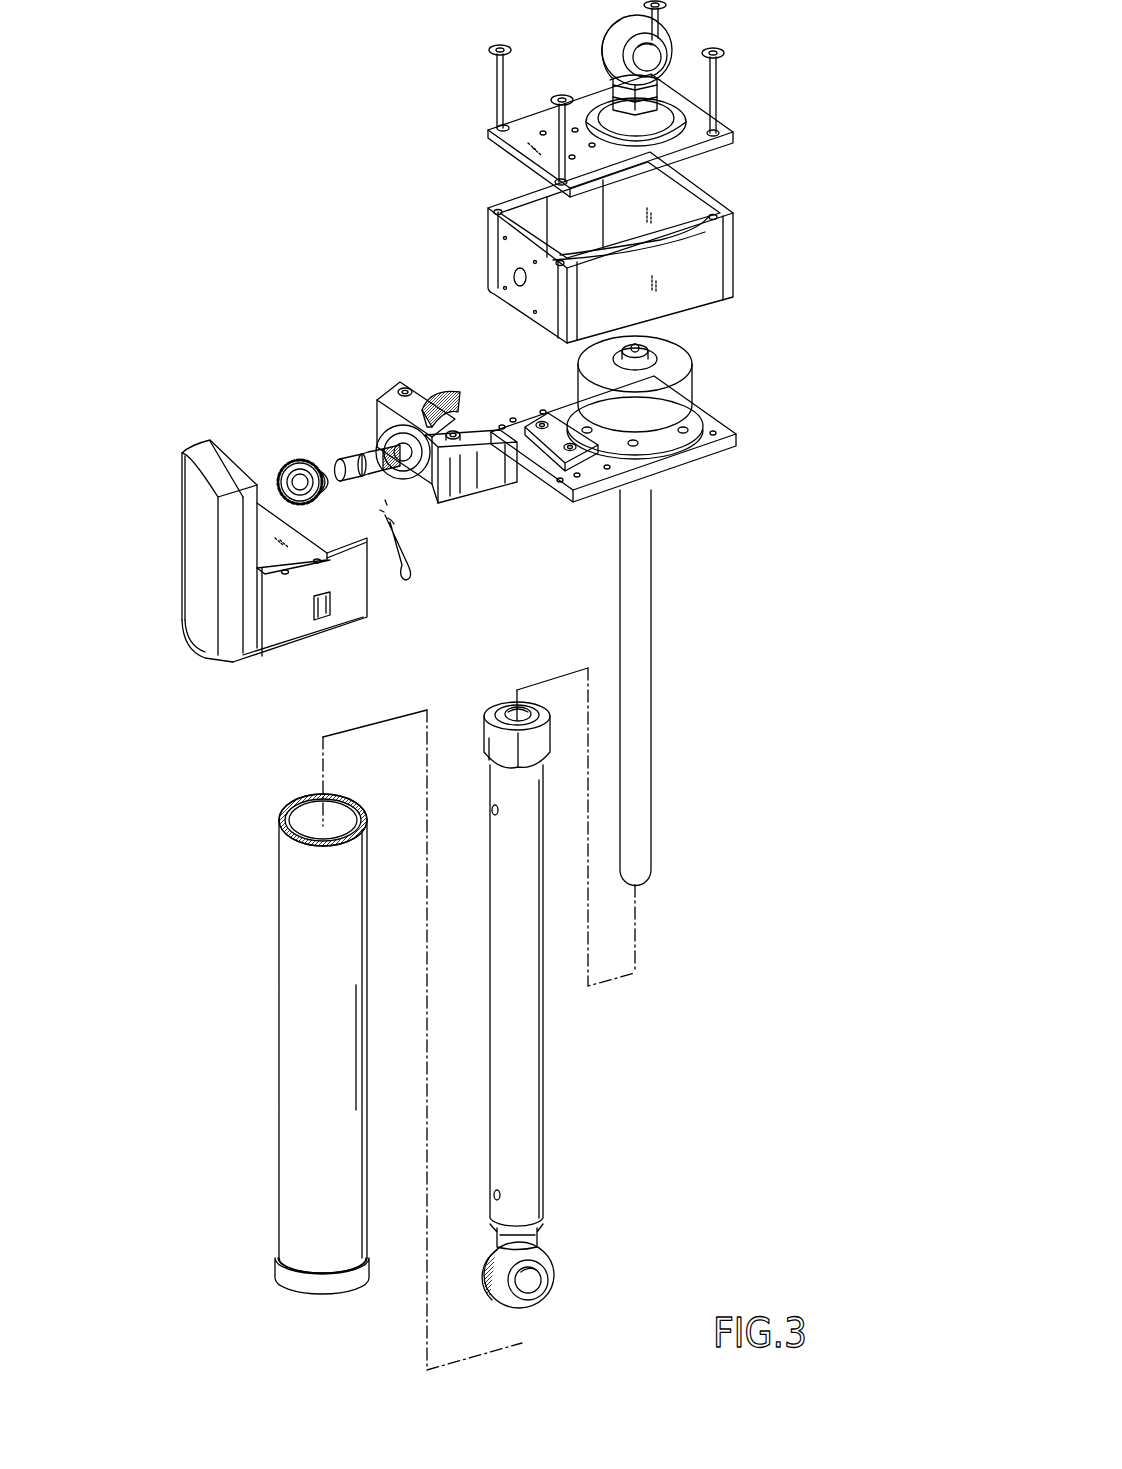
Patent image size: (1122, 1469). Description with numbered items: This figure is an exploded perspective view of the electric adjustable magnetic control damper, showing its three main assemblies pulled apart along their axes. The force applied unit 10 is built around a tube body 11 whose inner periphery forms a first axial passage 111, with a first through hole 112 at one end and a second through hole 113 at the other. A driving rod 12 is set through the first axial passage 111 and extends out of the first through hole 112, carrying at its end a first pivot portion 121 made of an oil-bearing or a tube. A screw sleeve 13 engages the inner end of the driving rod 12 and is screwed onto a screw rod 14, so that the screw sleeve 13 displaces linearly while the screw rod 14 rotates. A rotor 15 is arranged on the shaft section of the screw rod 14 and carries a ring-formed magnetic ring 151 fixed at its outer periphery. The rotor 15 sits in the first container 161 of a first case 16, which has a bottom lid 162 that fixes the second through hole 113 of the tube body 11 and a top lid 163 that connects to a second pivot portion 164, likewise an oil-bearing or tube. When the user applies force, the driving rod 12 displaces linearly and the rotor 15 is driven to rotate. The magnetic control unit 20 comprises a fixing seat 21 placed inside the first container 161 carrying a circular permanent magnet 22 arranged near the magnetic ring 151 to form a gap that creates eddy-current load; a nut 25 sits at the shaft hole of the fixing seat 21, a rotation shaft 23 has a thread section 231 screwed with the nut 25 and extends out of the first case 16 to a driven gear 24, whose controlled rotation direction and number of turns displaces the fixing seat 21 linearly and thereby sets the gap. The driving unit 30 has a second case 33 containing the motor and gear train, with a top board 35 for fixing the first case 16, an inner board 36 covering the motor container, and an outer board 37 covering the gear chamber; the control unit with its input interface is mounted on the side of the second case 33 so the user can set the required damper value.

The force applied unit 10 is at (846, 5).
The tube body 11 is at (360, 1040).
The first axial passage 111 is at (312, 815).
The first through hole 112 is at (287, 1293).
The second through hole 113 is at (283, 812).
The driving rod 12 is at (548, 982).
The first pivot portion 121 is at (545, 1295).
The screw sleeve 13 is at (507, 712).
The screw rod 14 is at (645, 628).
The rotor 15 is at (676, 389).
The magnetic ring 151 is at (675, 403).
The first case 16 is at (644, 247).
The first container 161 is at (697, 205).
The bottom lid 162 is at (703, 448).
The top lid 163 is at (687, 143).
The second pivot portion 164 is at (665, 65).
The magnetic control unit 20 is at (378, 431).
The fixing seat 21 is at (410, 505).
The circular permanent magnet 22 is at (450, 395).
The rotation shaft 23 is at (341, 419).
The thread section 231 is at (378, 445).
The driven gear 24 is at (290, 462).
The nut 25 is at (397, 443).
The driving unit 30 is at (268, 552).
The second case 33 is at (282, 555).
The top board 35 is at (272, 525).
The inner board 36 is at (355, 598).
The outer board 37 is at (200, 620).